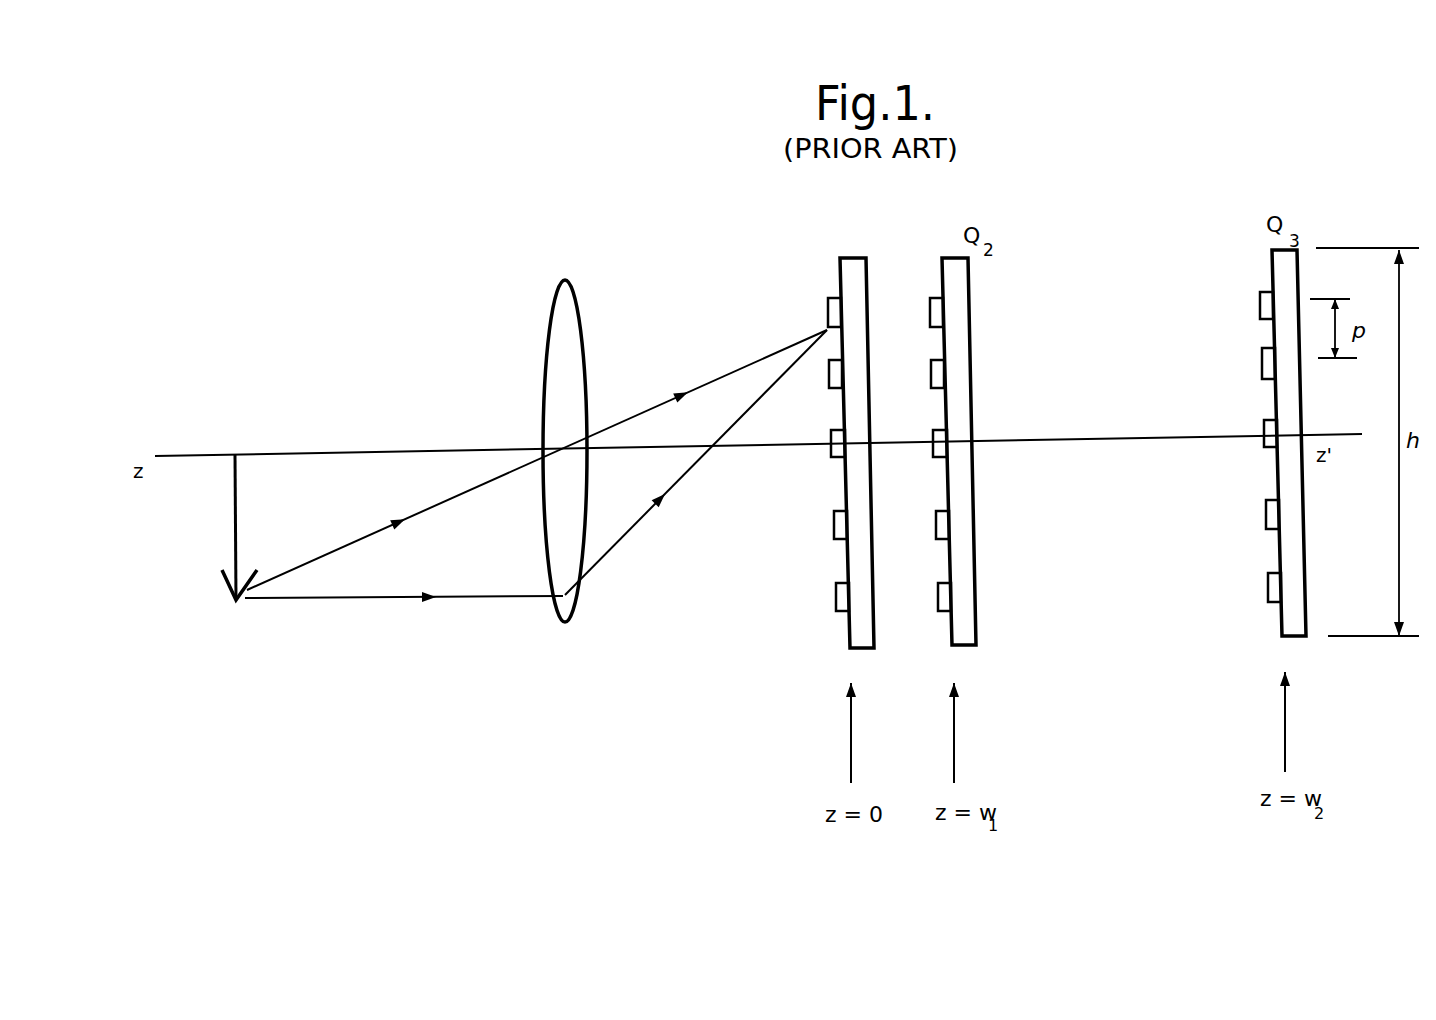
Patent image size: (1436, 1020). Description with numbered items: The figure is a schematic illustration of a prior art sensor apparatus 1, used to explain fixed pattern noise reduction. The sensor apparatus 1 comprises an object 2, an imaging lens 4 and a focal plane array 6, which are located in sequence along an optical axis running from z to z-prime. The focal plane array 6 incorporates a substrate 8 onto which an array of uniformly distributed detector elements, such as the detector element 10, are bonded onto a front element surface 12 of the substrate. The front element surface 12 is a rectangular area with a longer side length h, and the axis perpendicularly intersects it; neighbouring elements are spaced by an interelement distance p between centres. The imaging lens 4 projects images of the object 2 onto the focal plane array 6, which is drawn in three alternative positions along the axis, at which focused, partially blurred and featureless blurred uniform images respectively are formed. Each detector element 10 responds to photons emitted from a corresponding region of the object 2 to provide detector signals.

The sensor apparatus 1 is at (428, 333).
The object 2 is at (233, 510).
The imaging lens 4 is at (562, 377).
The focal plane array 6 is at (799, 447).
The substrate 8 is at (852, 293).
The detector element 10 is at (832, 528).
The front element surface 12 is at (840, 630).